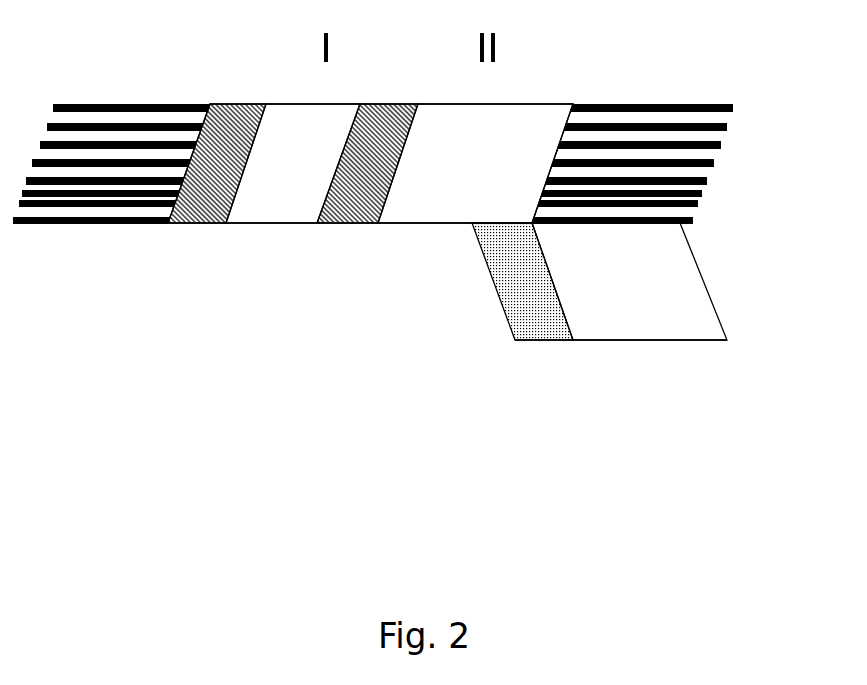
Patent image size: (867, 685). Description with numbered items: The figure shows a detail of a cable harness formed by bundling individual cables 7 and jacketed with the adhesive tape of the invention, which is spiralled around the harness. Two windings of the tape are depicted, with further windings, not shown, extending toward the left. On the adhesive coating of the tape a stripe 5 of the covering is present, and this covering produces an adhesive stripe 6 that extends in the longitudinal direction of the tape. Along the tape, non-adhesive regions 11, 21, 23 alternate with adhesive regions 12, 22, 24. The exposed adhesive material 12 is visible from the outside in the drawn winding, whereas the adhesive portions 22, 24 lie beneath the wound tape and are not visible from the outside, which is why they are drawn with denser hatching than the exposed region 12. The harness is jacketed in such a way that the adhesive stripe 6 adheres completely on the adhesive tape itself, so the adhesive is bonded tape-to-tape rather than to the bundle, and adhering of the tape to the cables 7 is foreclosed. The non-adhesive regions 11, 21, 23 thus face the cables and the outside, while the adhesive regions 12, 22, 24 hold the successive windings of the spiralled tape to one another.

The individual cables 7 is at (693, 122).
The adhesive region 24 is at (217, 163).
The non-adhesive region 23 is at (310, 172).
The adhesive region 22 is at (367, 163).
The non-adhesive region 21 is at (483, 190).
The exposed adhesive material 12 is at (532, 260).
The non-adhesive region 11 is at (632, 286).
The adhesive stripe 6 is at (559, 378).
The stripe of the covering 5 is at (679, 378).